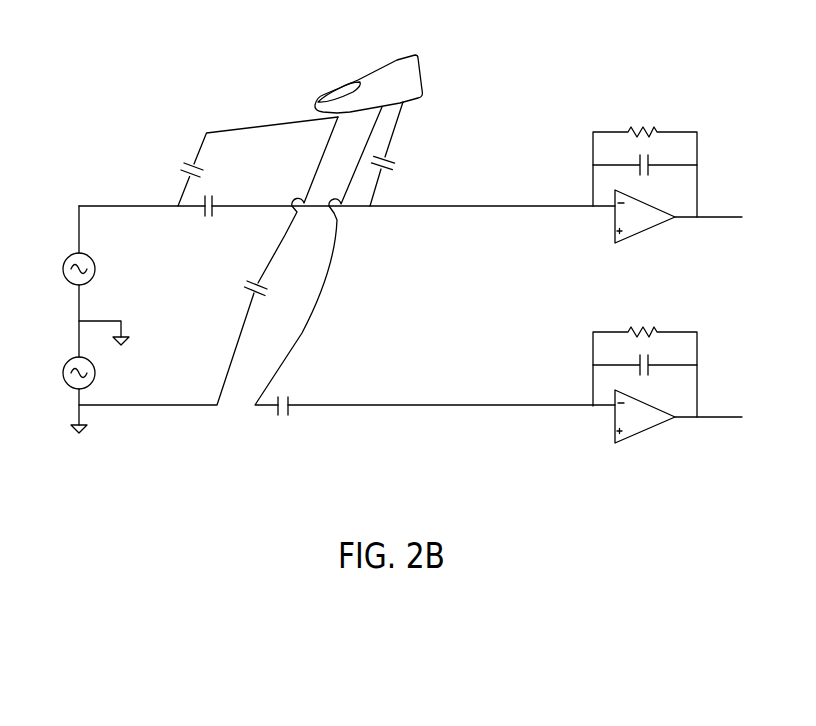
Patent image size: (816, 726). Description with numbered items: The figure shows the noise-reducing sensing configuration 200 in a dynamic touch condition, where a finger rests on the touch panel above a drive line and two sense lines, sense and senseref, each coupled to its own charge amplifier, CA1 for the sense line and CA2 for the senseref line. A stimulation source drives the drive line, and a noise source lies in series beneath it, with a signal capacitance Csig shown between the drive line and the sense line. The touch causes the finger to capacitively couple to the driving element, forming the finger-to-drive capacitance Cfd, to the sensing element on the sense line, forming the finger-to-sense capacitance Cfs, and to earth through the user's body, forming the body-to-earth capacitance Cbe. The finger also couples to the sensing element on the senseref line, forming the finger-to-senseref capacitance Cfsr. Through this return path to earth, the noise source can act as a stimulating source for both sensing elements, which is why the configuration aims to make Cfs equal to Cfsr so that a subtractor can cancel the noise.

The sensing configuration 200 is at (75, 126).
The charge amplifier CA1 is at (667, 185).
The charge amplifier CA2 is at (667, 385).
The signal capacitance between drive and sense lines Csig is at (216, 221).
The finger-to-drive capacitance Cfd is at (258, 161).
The body-to-earth capacitance Cbe is at (208, 261).
The finger-to-sense capacitance Cfs is at (396, 154).
The finger-to-senseref capacitance Cfsr is at (435, 275).